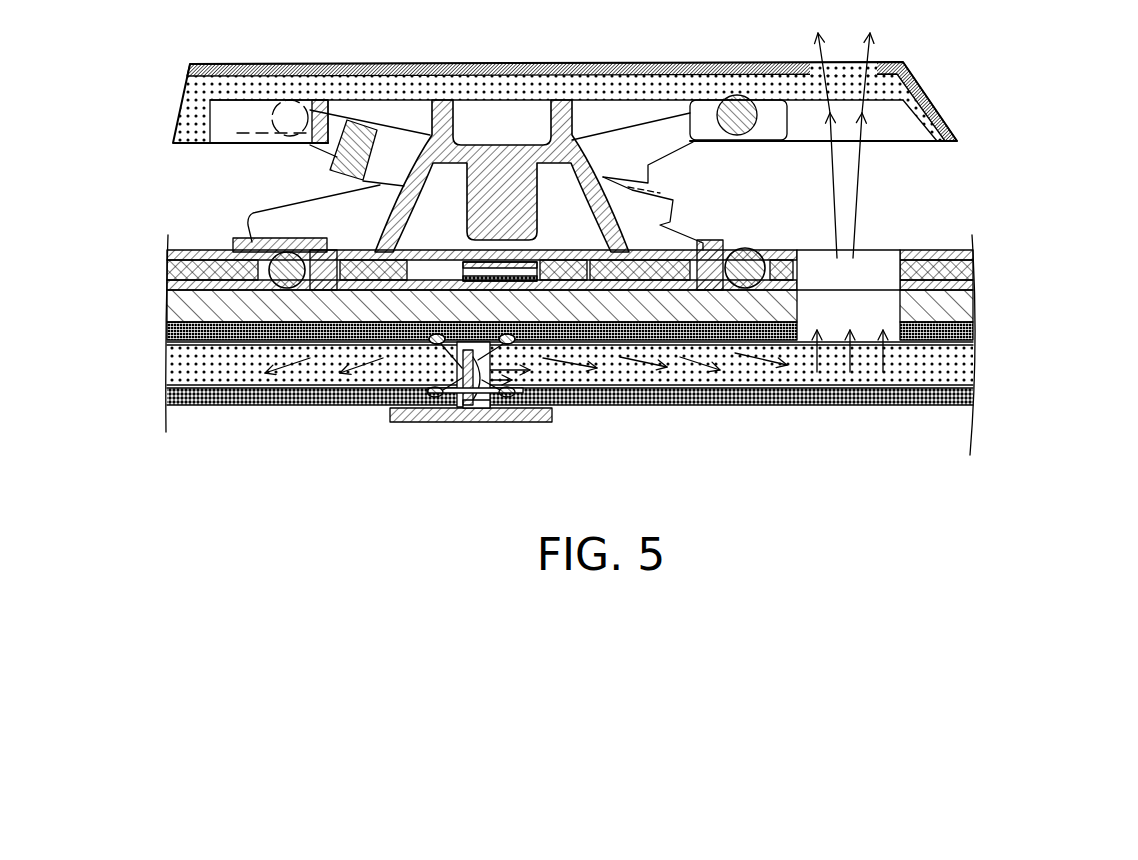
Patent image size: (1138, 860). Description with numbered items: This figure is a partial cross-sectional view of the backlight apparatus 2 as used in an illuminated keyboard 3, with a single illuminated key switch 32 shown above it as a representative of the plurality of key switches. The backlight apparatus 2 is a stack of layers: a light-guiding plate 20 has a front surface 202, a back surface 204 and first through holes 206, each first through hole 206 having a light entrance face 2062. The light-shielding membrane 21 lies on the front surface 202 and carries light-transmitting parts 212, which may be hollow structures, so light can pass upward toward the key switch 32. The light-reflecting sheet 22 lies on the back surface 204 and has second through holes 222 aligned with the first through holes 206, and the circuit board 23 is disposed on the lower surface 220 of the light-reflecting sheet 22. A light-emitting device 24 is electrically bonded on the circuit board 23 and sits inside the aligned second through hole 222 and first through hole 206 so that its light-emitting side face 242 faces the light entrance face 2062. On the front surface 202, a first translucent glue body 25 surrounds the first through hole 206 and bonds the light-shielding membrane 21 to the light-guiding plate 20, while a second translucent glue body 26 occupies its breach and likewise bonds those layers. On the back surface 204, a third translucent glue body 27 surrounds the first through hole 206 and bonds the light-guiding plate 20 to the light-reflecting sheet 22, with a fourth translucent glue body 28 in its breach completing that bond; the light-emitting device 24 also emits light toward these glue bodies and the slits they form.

The illuminated keyboard 3 is at (603, 277).
The illuminated key switch 32 is at (609, 178).
The backlight apparatus 2 is at (564, 378).
The light-guiding plate 20 is at (203, 380).
The front surface 202 is at (172, 345).
The back surface 204 is at (221, 397).
The first through hole 206 is at (458, 347).
The light entrance face 2062 is at (483, 353).
The light-shielding membrane 21 is at (917, 340).
The light-transmitting part 212 is at (798, 293).
The light-reflecting sheet 22 is at (828, 398).
The lower surface 220 is at (293, 398).
The second through hole 222 is at (478, 410).
The circuit board 23 is at (506, 412).
The light-emitting device 24 is at (467, 385).
The light-emitting side face 242 is at (512, 398).
The first translucent glue body 25 is at (435, 341).
The second translucent glue body 26 is at (511, 342).
The third translucent glue body 27 is at (430, 393).
The fourth translucent glue body 28 is at (497, 393).